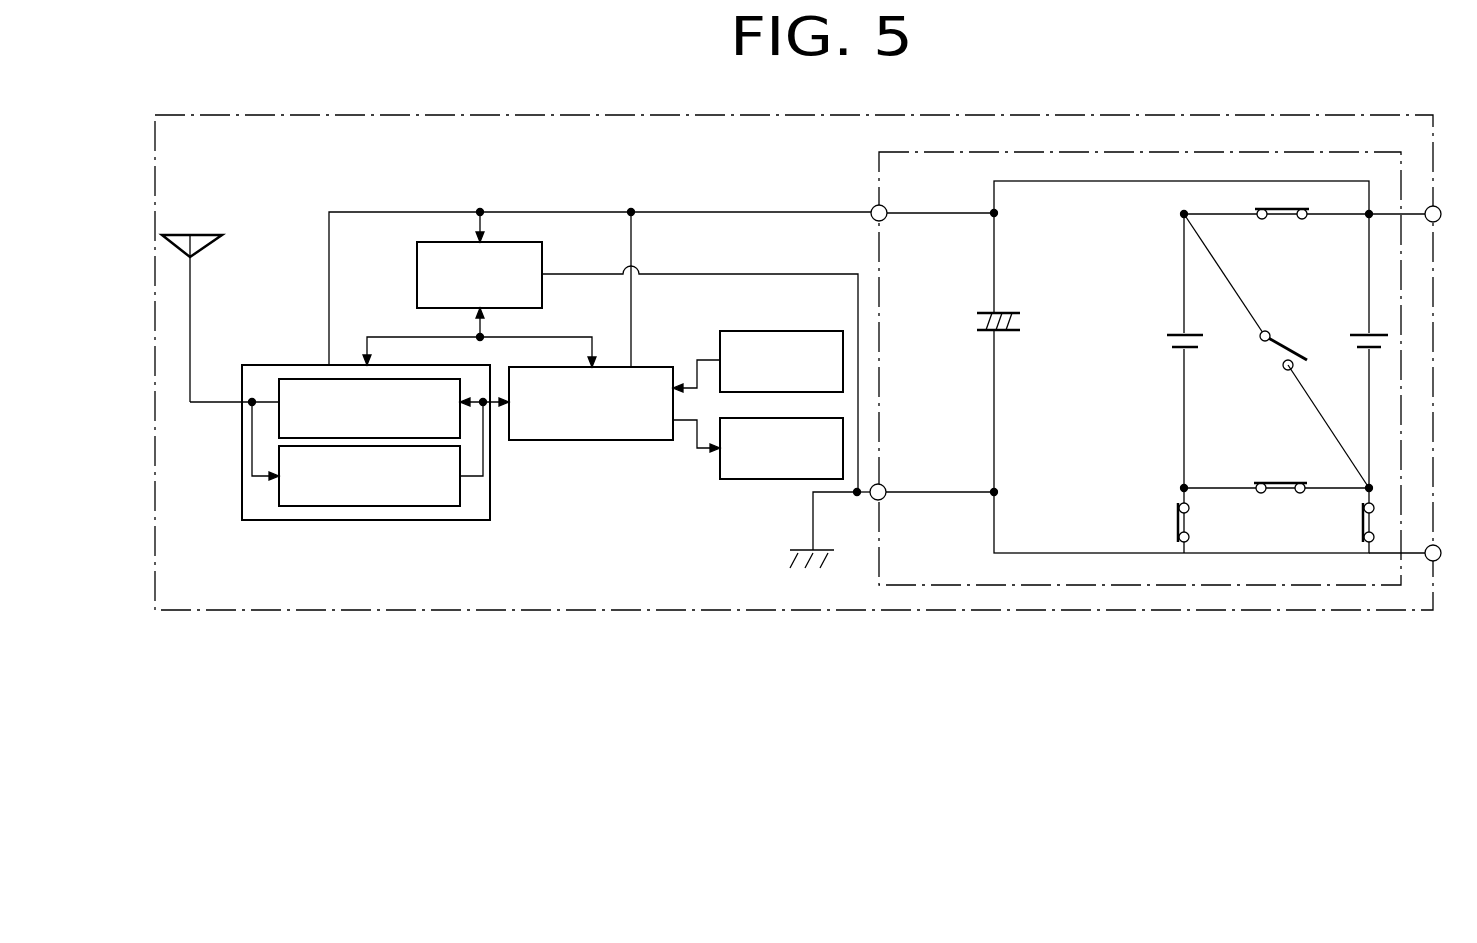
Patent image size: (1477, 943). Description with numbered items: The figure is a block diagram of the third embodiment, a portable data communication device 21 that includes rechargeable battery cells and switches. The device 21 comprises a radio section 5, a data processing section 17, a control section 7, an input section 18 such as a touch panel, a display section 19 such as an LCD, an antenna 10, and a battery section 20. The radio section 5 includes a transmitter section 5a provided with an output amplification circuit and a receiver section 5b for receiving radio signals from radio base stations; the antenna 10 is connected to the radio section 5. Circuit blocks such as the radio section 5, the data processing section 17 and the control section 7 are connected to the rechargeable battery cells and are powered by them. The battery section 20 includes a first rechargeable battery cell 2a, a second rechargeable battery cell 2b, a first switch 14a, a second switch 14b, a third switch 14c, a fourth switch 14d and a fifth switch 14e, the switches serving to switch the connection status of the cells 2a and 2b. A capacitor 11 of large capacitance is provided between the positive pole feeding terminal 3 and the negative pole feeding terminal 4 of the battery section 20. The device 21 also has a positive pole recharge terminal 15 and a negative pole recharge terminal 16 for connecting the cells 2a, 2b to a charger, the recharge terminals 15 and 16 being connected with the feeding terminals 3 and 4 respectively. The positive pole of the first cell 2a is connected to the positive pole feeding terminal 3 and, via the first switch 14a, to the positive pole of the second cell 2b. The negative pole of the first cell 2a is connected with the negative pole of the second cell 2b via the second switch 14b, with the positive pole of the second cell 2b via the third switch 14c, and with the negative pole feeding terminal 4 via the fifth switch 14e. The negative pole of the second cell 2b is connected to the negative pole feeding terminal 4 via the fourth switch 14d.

The first rechargeable battery cell 2a is at (1350, 340).
The second rechargeable battery cell 2b is at (1167, 343).
The positive pole feeding terminal 3 is at (887, 204).
The negative pole feeding terminal 4 is at (885, 500).
The radio section 5 is at (366, 448).
The transmitter section 5a is at (302, 378).
The receiver section 5b is at (336, 507).
The control section 7 is at (417, 280).
The antenna 10 is at (198, 234).
The capacitor 11 is at (977, 323).
The first switch 14a is at (1283, 220).
The second switch 14b is at (1280, 482).
The third switch 14c is at (1287, 339).
The fourth switch 14d is at (1178, 526).
The fifth switch 14e is at (1363, 528).
The positive pole recharge terminal 15 is at (1437, 206).
The negative pole recharge terminal 16 is at (1440, 545).
The data processing section 17 is at (590, 442).
The input section 18 is at (777, 331).
The display section 19 is at (757, 481).
The battery section 20 is at (1165, 587).
The portable data communication device 21 is at (699, 612).